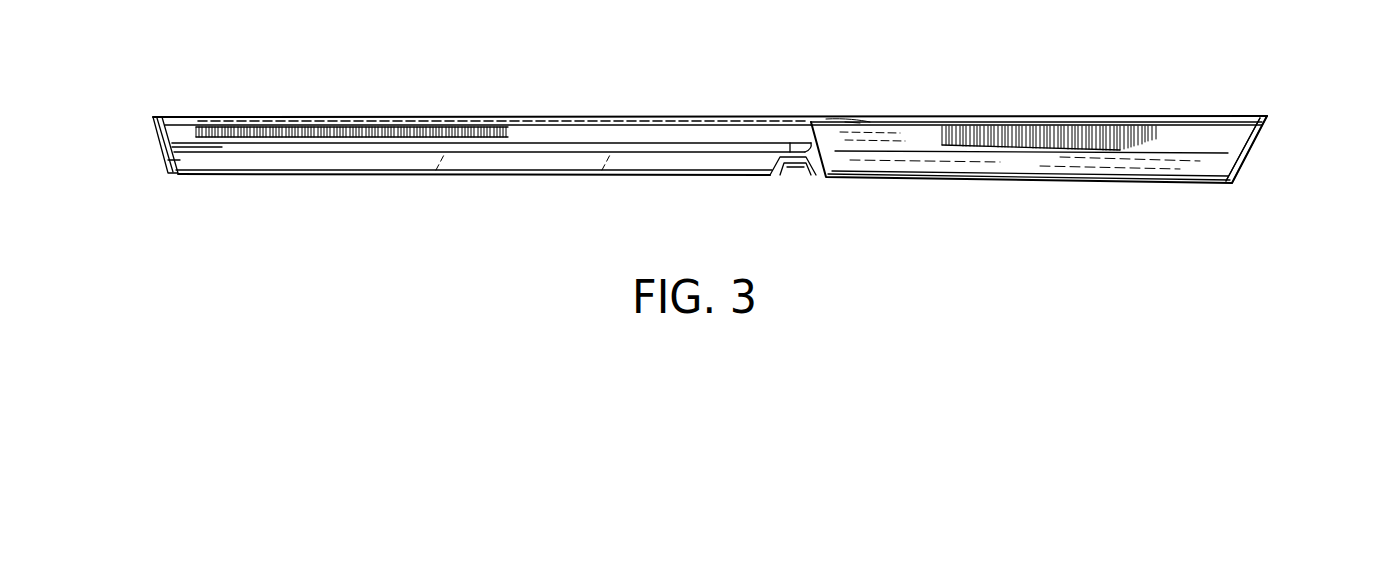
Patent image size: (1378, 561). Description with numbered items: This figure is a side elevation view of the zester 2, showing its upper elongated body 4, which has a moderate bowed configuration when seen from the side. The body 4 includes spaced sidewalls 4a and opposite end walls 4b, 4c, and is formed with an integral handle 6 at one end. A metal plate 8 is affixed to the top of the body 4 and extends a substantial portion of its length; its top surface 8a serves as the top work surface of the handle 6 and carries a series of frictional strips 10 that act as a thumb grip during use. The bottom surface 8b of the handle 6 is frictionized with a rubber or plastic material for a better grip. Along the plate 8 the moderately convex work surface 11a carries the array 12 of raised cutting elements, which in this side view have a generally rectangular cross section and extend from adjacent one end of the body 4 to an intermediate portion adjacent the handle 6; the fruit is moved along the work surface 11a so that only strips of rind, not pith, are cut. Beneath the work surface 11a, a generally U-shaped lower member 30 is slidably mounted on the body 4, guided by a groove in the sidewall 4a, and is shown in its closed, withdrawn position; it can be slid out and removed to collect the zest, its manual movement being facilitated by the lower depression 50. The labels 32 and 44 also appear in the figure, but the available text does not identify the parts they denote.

The zester 2 is at (878, 94).
The upper elongated body 4 is at (995, 152).
The sidewall 4a is at (885, 128).
The end wall 4b is at (1255, 150).
The end wall 4c is at (162, 146).
The handle 6 is at (1103, 120).
The metal plate 8 is at (793, 117).
The top surface of the plate 8a is at (960, 117).
The bottom surface of the handle 8b is at (924, 173).
The frictional strips 10 is at (293, 117).
The convex work surface 11a is at (517, 117).
The array of cutting elements 12 is at (360, 117).
The lower member 30 is at (333, 148).
The slider front end 32 is at (222, 145).
The engagement notch 44 is at (173, 161).
The lower depression 50 is at (793, 172).